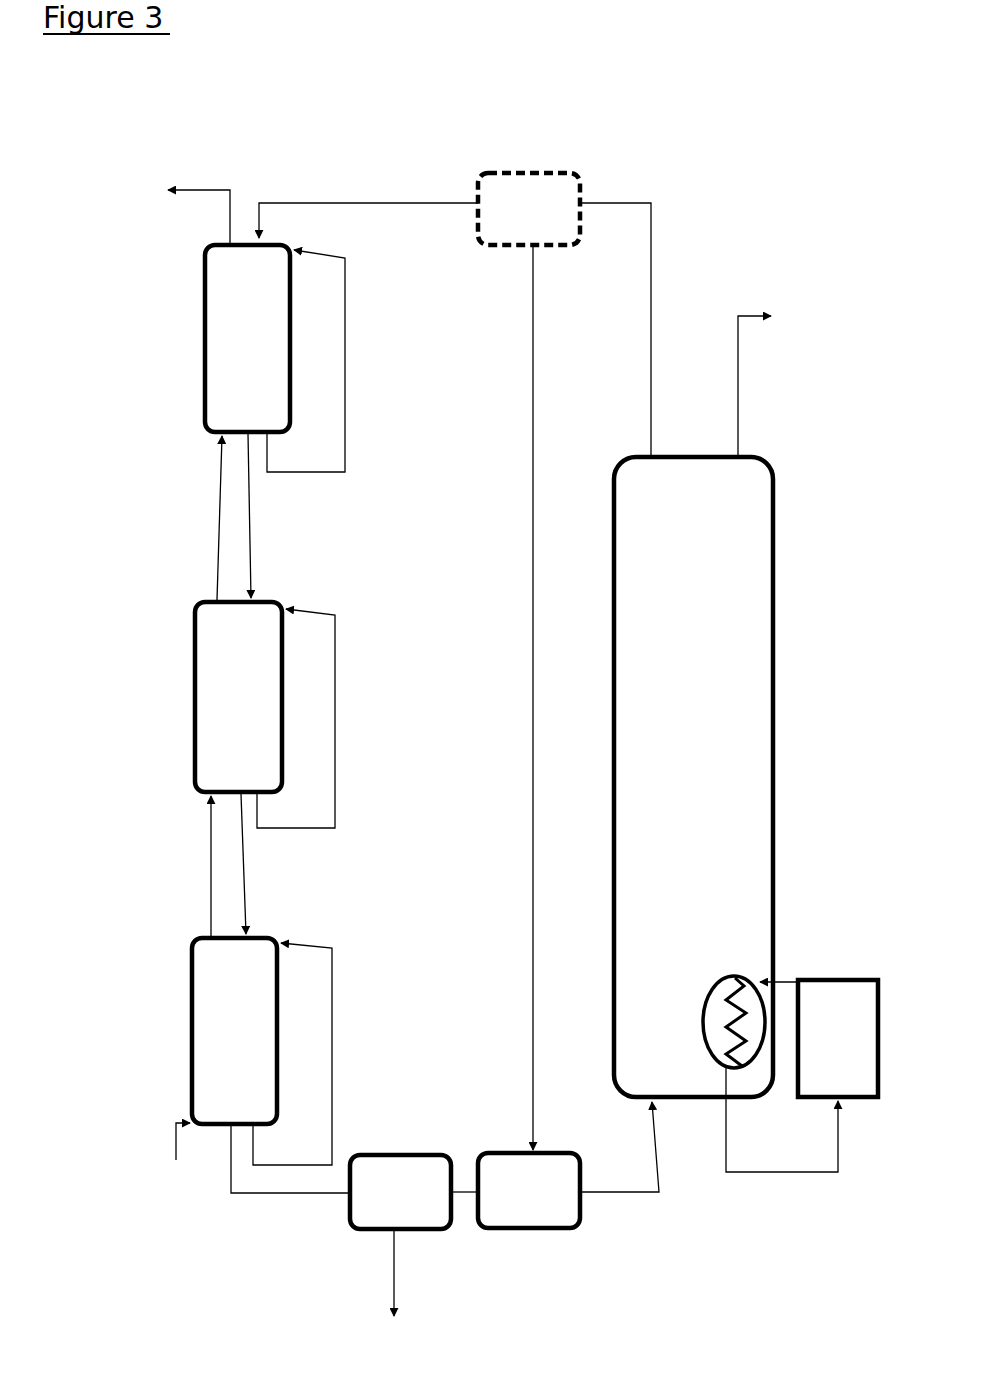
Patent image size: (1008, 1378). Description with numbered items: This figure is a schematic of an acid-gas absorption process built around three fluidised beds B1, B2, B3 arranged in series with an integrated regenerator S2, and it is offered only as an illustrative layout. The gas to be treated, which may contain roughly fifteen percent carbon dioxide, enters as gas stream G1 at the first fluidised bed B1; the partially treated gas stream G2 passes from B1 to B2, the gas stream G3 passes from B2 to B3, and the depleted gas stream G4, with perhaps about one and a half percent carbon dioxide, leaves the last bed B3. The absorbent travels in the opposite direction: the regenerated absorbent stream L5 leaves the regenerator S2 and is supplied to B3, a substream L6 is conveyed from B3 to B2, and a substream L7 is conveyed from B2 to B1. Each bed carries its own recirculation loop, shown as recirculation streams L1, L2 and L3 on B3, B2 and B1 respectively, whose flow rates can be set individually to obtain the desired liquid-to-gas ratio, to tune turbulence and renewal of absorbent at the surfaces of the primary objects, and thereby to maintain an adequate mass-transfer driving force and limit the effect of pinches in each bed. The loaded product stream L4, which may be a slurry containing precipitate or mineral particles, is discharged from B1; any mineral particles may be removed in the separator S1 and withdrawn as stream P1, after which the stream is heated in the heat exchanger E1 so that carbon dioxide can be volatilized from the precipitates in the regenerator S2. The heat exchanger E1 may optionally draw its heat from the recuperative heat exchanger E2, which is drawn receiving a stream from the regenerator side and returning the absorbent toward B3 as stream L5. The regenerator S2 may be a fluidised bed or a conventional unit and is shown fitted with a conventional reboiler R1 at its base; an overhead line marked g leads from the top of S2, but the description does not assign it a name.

The fluidised bed B1 is at (234, 1031).
The fluidised bed B2 is at (238, 697).
The fluidised bed B3 is at (247, 338).
The separator S1 is at (400, 1192).
The regenerator S2 is at (693, 777).
The heat exchanger E1 is at (529, 1190).
The recuperative heat exchanger E2 is at (529, 209).
The reboiler R1 is at (802, 1076).
The recirculation stream L1 is at (368, 337).
The recirculation stream L2 is at (321, 718).
The recirculation stream L3 is at (314, 1054).
The loaded product stream L4 is at (445, 1175).
The regenerated absorbent stream L5 is at (615, 676).
The substream L6 is at (276, 516).
The substream L7 is at (271, 864).
The gas stream G1 is at (162, 1160).
The gas stream G2 is at (167, 866).
The gas stream G3 is at (146, 518).
The gas stream G4 is at (156, 211).
The released gas stream g is at (763, 386).
The stream P1 is at (418, 1272).